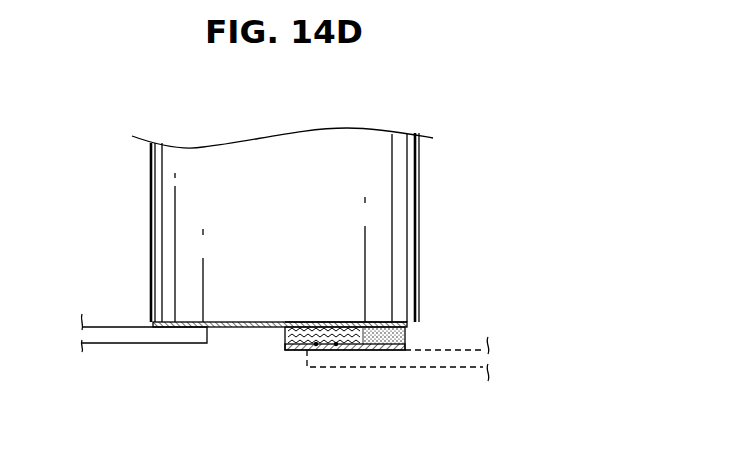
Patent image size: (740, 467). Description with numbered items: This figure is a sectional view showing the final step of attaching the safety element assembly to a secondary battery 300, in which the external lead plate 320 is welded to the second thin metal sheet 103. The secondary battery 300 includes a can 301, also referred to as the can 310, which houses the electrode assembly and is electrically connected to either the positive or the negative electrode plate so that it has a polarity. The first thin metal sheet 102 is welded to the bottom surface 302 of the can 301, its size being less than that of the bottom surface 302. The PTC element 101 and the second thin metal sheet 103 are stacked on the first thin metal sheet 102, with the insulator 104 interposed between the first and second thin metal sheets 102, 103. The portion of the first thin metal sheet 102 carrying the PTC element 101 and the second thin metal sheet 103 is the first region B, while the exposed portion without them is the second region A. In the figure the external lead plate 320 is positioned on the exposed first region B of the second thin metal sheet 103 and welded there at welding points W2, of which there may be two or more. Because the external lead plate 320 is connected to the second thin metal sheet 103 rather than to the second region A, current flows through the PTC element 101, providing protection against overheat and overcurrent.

The secondary battery 300 is at (380, 186).
The can 301 is at (150, 173).
The bottom surface 302 is at (147, 325).
The can 310 is at (140, 343).
The external lead plate 320 is at (430, 368).
The PTC element 101 is at (405, 334).
The first thin metal sheet 102 is at (410, 323).
The second thin metal sheet 103 is at (300, 349).
The insulator 104 is at (285, 341).
The welding points W2 is at (316, 343).
The second region A is at (246, 348).
The first region B is at (342, 358).